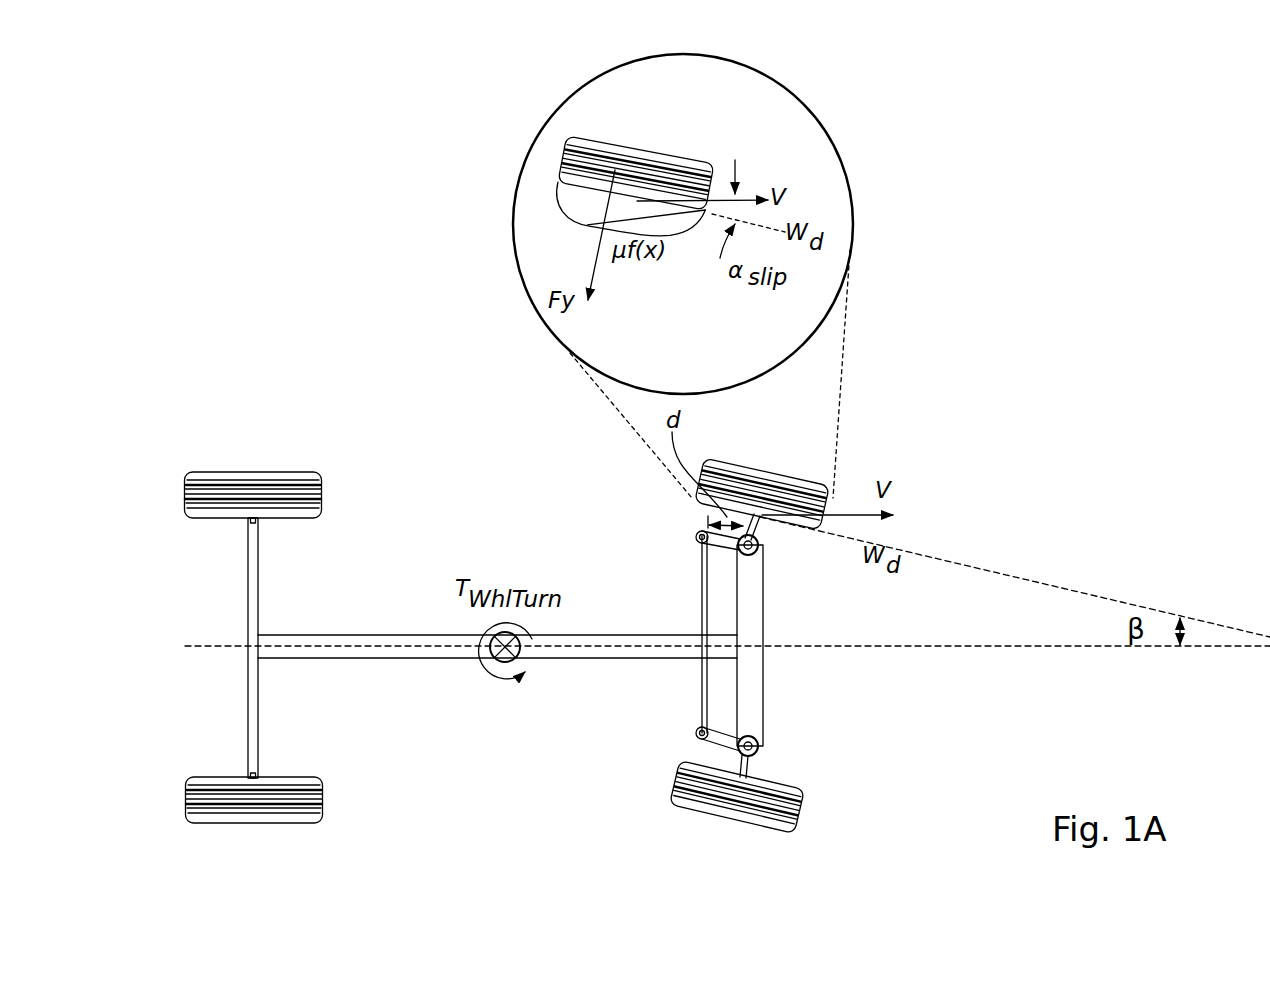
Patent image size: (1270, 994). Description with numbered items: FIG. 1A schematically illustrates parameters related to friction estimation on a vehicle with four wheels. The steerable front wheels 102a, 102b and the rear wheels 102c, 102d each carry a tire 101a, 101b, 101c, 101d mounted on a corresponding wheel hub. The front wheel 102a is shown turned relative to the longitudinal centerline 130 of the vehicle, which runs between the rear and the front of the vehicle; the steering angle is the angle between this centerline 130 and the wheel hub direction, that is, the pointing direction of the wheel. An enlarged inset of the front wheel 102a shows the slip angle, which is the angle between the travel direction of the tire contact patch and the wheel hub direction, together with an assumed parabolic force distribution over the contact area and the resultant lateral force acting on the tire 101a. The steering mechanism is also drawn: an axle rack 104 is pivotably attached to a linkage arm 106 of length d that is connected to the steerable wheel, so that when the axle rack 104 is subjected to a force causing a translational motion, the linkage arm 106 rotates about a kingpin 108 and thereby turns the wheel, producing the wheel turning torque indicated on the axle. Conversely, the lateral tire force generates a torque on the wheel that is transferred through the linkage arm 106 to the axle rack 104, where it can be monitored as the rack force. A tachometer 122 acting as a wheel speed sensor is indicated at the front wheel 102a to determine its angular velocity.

The tire 101a is at (807, 488).
The tire 101b is at (803, 790).
The tire 101c is at (264, 813).
The tire 101d is at (257, 467).
The front wheel 102a is at (775, 477).
The front wheel 102b is at (782, 805).
The rear wheel 102c is at (275, 769).
The rear wheel 102d is at (267, 462).
The axle rack 104 is at (698, 690).
The linkage arm 106 is at (717, 543).
The kingpin 108 is at (702, 528).
The tachometer 122 is at (764, 521).
The longitudinal centerline 130 is at (1036, 651).